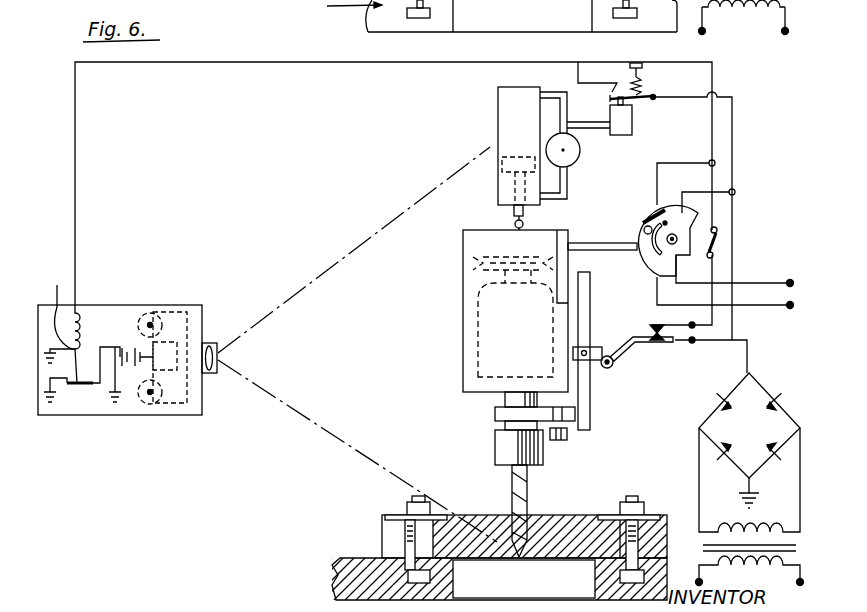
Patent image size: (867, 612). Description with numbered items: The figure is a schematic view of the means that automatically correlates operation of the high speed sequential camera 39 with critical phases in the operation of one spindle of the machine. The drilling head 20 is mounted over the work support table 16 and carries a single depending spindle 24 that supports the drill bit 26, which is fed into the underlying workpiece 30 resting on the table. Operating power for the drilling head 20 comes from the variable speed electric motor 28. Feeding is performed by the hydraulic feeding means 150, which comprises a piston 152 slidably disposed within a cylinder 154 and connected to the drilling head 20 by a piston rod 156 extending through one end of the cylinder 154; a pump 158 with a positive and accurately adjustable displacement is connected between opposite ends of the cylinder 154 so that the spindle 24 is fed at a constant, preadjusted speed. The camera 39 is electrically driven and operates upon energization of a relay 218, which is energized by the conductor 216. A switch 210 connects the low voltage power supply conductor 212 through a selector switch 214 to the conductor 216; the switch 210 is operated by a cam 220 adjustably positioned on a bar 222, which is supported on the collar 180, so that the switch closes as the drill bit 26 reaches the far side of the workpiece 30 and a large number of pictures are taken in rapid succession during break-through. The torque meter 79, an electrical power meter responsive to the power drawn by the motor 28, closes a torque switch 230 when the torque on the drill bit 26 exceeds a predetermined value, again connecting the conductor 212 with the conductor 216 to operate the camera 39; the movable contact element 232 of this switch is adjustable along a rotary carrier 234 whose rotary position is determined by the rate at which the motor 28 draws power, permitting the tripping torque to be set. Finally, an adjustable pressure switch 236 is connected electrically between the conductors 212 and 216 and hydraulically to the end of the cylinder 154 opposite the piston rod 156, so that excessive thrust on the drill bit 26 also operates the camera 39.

The conductor 216 is at (221, 64).
The cylinder 154 is at (498, 104).
The hydraulic feeding means 150 is at (489, 130).
The piston 152 is at (502, 160).
The piston rod 156 is at (513, 212).
The pump 158 is at (577, 162).
The adjustable pressure switch 236 is at (643, 109).
The torque switch 230 is at (648, 212).
The movable contact element 232 is at (640, 226).
The rotary carrier 234 is at (683, 232).
The selector switch 214 is at (722, 243).
The bar 222 is at (590, 285).
The torque meter 79 is at (646, 274).
The cam 220 is at (600, 348).
The low voltage power supply conductor 212 is at (745, 344).
The switch 210 is at (683, 343).
The variable speed electric motor 28 is at (478, 314).
The drilling head 20 is at (463, 358).
The collar 180 is at (495, 412).
The spindle 24 is at (495, 437).
The drill bit 26 is at (511, 478).
The workpiece 30 is at (552, 528).
The work support table 16 is at (358, 560).
The relay 218 is at (46, 305).
The high speed sequential camera 39 is at (82, 421).